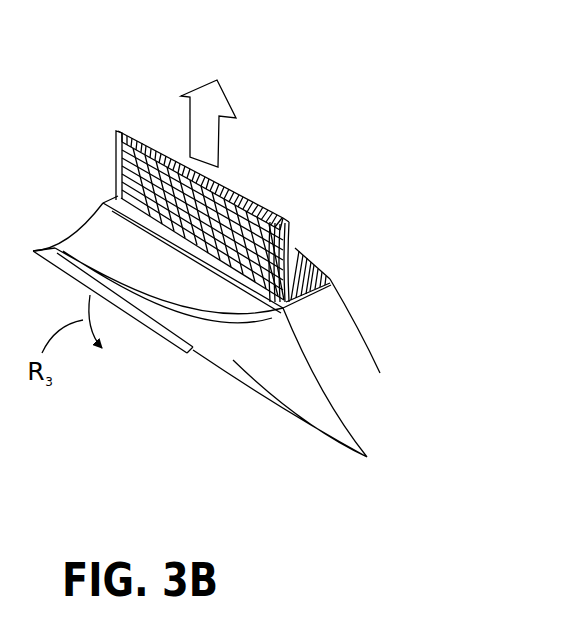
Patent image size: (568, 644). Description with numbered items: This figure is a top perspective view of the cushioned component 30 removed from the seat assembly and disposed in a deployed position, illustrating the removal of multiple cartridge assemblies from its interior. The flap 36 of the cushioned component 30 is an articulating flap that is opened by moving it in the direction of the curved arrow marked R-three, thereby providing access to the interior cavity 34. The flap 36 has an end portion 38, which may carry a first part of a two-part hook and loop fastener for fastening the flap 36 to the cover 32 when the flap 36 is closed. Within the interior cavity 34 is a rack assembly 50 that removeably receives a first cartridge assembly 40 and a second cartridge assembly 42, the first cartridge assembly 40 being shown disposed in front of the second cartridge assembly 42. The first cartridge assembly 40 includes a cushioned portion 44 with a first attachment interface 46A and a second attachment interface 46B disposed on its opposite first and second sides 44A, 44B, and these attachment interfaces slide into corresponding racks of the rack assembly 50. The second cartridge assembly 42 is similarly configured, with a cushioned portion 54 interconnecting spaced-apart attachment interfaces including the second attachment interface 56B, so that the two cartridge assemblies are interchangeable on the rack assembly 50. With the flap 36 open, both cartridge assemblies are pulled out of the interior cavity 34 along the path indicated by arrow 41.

The cushioned component 30 is at (358, 259).
The cover 32 is at (300, 400).
The interior cavity 34 is at (329, 348).
The flap 36 is at (217, 338).
The end portion 38 is at (42, 247).
The first cartridge assembly 40 is at (199, 264).
The arrow 41 is at (205, 113).
The second cartridge assembly 42 is at (301, 240).
The cushioned portion 44 is at (143, 138).
The first side 44A is at (118, 197).
The second side 44B is at (233, 280).
The first attachment interface 46A is at (117, 135).
The second attachment interface 46B is at (283, 310).
The rack assembly 50 is at (321, 259).
The cushioned portion 54 is at (288, 228).
The second attachment interface 56B is at (312, 292).